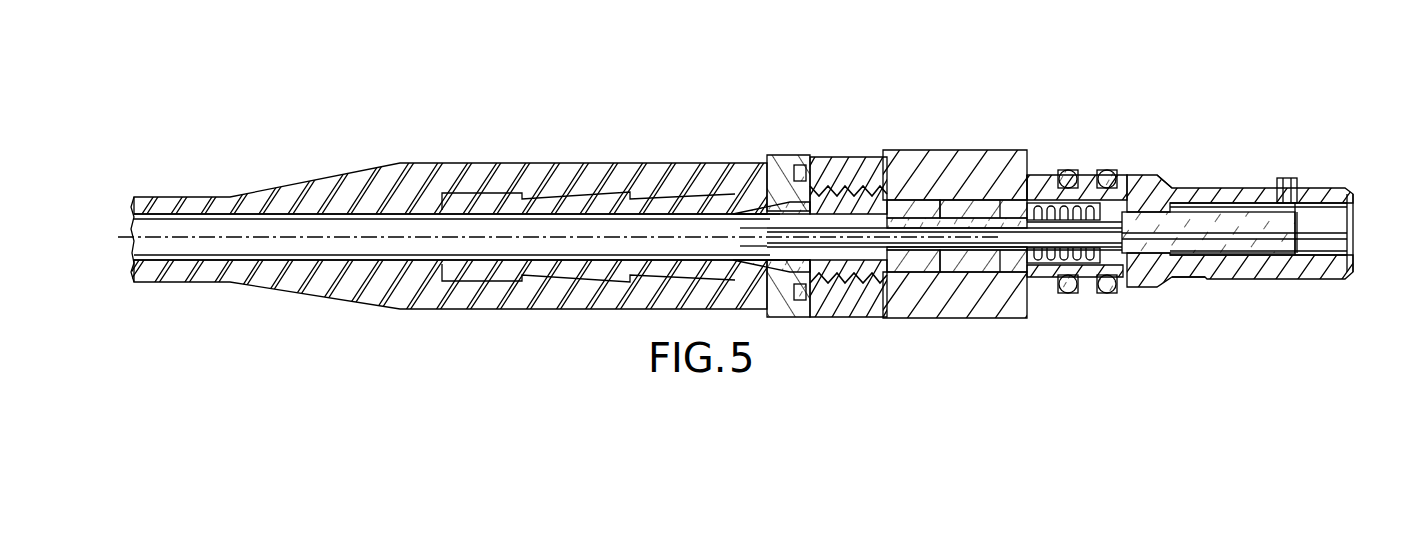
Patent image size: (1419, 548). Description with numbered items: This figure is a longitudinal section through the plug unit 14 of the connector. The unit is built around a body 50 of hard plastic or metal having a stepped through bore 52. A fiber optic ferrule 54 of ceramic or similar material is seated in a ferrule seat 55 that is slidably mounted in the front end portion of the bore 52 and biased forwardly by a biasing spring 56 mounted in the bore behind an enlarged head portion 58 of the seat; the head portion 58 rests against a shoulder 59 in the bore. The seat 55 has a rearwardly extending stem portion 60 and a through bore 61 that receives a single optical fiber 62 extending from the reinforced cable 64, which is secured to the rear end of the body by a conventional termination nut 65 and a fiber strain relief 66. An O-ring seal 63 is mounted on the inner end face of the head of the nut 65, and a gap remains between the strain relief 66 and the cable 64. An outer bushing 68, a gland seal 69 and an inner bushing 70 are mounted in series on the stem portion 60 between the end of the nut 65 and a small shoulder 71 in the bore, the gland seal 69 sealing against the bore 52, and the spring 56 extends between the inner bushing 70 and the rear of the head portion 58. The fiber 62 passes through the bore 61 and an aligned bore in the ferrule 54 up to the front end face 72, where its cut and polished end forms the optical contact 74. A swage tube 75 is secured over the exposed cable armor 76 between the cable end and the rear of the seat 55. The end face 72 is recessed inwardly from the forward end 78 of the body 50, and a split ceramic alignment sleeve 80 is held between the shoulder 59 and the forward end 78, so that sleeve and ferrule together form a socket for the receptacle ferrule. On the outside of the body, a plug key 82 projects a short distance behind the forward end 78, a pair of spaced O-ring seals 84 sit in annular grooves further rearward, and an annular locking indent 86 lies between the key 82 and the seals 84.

The plug unit 14 is at (852, 135).
The body 50 is at (1007, 150).
The stepped through bore 52 is at (1024, 192).
The fiber optic ferrule 54 is at (1255, 250).
The ferrule seat 55 is at (1097, 222).
The biasing spring 56 is at (1082, 198).
The enlarged head portion 58 is at (1162, 268).
The shoulder 59 is at (1183, 194).
The stem portion 60 is at (946, 212).
The through bore 61 is at (937, 212).
The optical fiber 62 is at (1110, 252).
The O-ring seal 63 is at (800, 168).
The cable 64 is at (365, 228).
The termination nut 65 is at (770, 165).
The fiber strain relief 66 is at (540, 176).
The outer bushing 68 is at (922, 258).
The gland seal 69 is at (980, 258).
The inner bushing 70 is at (1027, 272).
The shoulder 71 is at (1062, 203).
The front end face 72 is at (1299, 214).
The optical contact 74 is at (1297, 235).
The swage tube 75 is at (825, 262).
The cable armor 76 is at (740, 205).
The forward end 78 is at (1353, 204).
The split ceramic alignment sleeve 80 is at (1238, 203).
The plug key 82 is at (1288, 178).
The O-ring seals 84 is at (1103, 293).
The locking indent 86 is at (1192, 278).